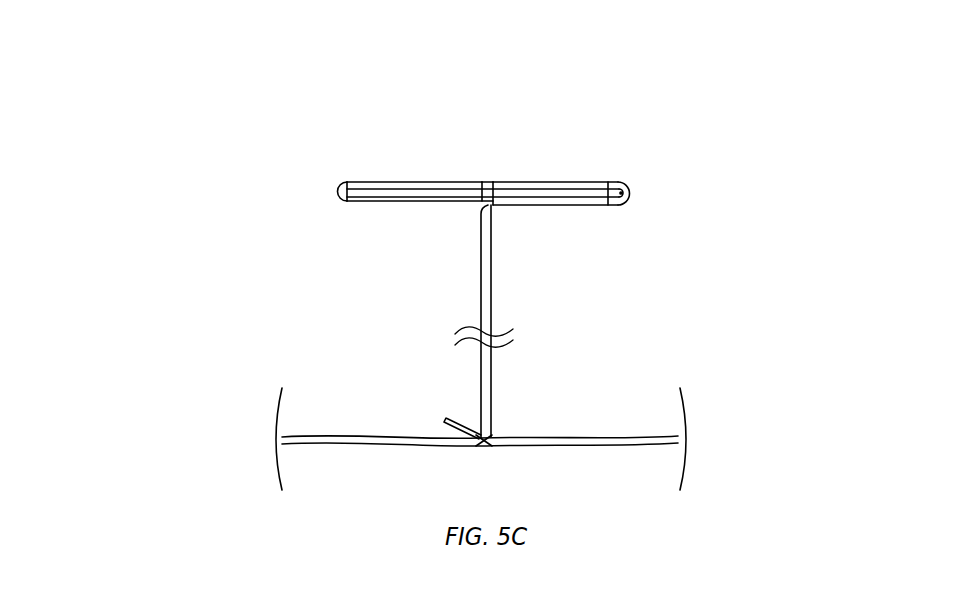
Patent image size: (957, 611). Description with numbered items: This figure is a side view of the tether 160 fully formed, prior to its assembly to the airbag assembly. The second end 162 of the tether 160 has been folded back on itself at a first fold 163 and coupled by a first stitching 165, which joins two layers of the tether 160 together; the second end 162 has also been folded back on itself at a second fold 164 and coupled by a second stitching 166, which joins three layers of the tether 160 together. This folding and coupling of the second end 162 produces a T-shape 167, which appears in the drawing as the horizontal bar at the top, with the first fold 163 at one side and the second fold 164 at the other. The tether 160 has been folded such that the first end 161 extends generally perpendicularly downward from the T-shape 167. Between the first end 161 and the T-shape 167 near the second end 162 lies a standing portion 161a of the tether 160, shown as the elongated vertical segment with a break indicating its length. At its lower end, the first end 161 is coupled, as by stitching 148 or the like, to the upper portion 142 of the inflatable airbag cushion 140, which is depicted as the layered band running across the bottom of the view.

The tether 160 is at (437, 240).
The first fold 163 is at (340, 184).
The first stitching 165 is at (478, 184).
The T-shape 167 is at (487, 154).
The second stitching 166 is at (506, 207).
The second end 162 is at (631, 184).
The second fold 164 is at (627, 205).
The first end 161 is at (452, 418).
The standing portion 161a is at (487, 323).
The stitching 148 is at (480, 447).
The upper portion 142 is at (595, 439).
The inflatable airbag cushion 140 is at (615, 447).